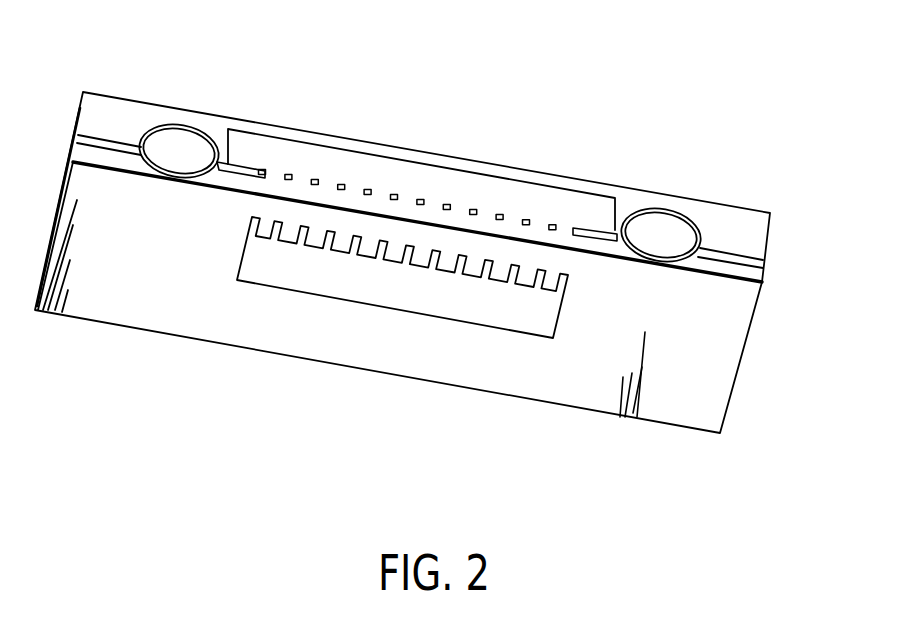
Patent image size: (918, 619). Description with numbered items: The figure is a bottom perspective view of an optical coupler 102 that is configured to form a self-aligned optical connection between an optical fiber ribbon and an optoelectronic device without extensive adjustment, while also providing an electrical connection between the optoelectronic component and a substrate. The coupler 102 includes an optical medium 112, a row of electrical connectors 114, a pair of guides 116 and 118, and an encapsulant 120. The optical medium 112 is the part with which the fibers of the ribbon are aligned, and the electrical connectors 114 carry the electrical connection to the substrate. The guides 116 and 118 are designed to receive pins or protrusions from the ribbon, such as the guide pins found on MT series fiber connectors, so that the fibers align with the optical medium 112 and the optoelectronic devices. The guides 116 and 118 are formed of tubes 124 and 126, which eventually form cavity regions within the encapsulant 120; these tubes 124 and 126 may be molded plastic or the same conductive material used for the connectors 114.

The coupler 102 is at (571, 167).
The optical medium 112 is at (332, 155).
The electrical connectors 114 is at (397, 195).
The guide 116 is at (183, 147).
The guide 118 is at (665, 230).
The encapsulant 120 is at (738, 377).
The tube 124 is at (205, 134).
The tube 126 is at (703, 231).